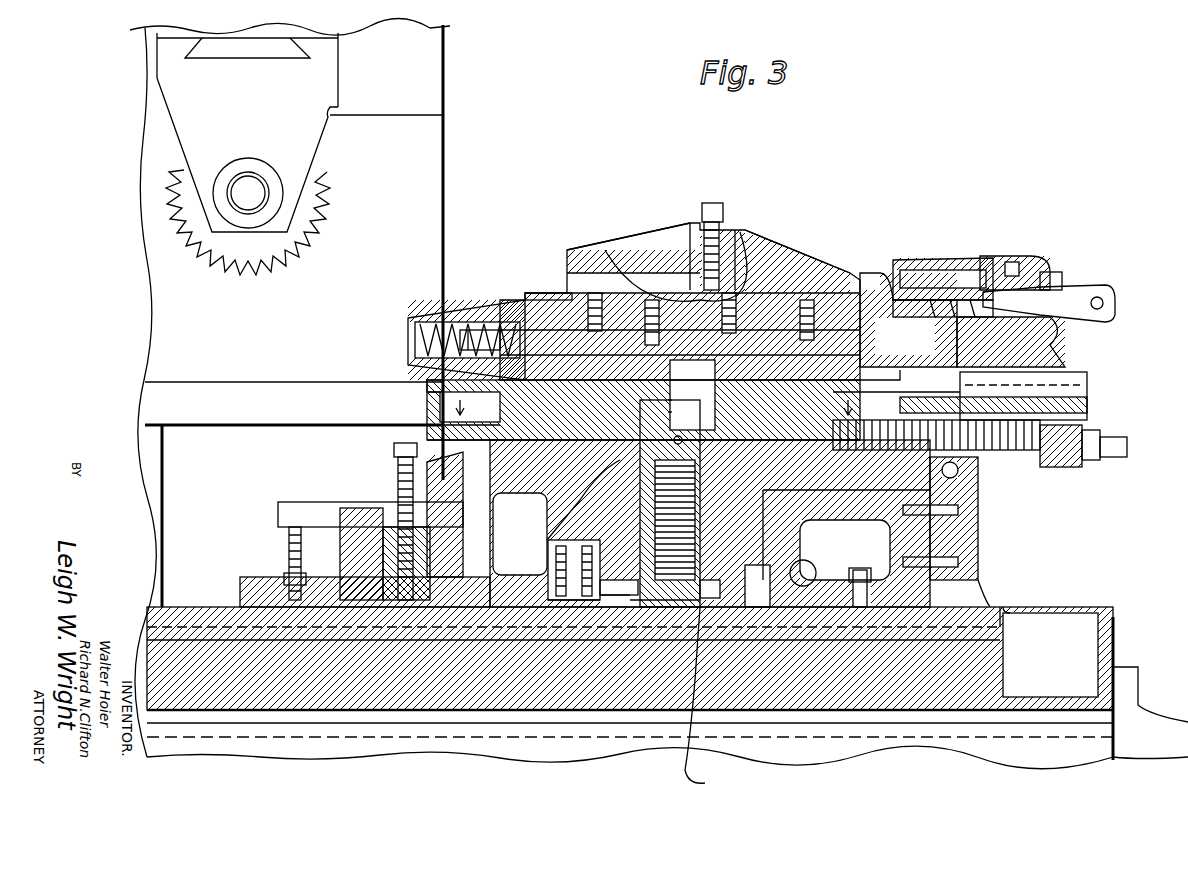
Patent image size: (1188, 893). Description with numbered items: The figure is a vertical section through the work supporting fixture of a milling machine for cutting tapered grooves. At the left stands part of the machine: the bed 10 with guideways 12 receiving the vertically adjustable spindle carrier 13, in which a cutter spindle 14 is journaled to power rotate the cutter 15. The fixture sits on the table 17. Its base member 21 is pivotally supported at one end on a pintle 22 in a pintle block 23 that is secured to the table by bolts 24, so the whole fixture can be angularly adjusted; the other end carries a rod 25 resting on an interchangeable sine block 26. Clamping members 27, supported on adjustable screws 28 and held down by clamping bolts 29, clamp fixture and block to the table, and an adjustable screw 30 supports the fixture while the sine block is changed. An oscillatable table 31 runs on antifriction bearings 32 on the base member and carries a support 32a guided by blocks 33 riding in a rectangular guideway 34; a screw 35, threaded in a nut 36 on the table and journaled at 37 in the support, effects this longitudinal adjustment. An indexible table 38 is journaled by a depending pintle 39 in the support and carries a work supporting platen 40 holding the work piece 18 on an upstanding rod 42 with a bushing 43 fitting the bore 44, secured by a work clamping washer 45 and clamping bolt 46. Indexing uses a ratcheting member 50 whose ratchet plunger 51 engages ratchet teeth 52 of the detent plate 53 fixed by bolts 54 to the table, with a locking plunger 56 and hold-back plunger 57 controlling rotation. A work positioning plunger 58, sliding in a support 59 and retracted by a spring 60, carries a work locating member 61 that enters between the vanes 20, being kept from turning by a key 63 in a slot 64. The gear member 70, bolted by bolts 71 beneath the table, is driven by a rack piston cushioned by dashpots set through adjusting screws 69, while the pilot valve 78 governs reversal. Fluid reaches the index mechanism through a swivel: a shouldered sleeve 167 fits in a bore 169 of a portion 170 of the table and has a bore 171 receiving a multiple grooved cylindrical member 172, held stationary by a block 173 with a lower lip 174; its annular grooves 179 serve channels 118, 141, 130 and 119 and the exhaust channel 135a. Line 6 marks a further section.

The section line 6 is at (654, 397).
The bed 10 is at (300, 745).
The guideways 12 is at (147, 66).
The spindle carrier 13 is at (395, 148).
The cutter spindle 14 is at (245, 190).
The cutter 15 is at (175, 208).
The table 17 is at (1116, 626).
The work piece 18 is at (640, 232).
The vanes 20 is at (635, 230).
The base member 21 is at (985, 585).
The pintle 22 is at (825, 545).
The pintle block 23 is at (982, 598).
The bolts 24 is at (860, 568).
The rod 25 is at (490, 560).
The sine block 26 is at (490, 598).
The clamping members 27 is at (300, 512).
The adjustable screws 28 is at (289, 555).
The clamping bolts 29 is at (427, 500).
The adjustable screw 30 is at (440, 395).
The oscillatable table 31 is at (505, 440).
The antifriction bearings 32 is at (500, 455).
The support 32a is at (450, 385).
The blocks 33 is at (448, 410).
The rectangular guideway 34 is at (505, 425).
The screw 35 is at (1005, 450).
The nut 36 is at (910, 413).
The journal 37 is at (1062, 467).
The indexible table 38 is at (540, 295).
The depending pintle 39 is at (870, 273).
The work supporting platen 40 is at (870, 273).
The upstanding rod 42 is at (735, 295).
The bushing 43 is at (728, 232).
The bore 44 is at (740, 232).
The work clamping washer 45 is at (700, 230).
The clamping bolt 46 is at (712, 203).
The ratcheting member 50 is at (420, 340).
The ratchet plunger 51 is at (478, 332).
The ratchet teeth 52 is at (600, 330).
The detent plate 53 is at (560, 290).
The bolts 54 is at (808, 300).
The locking plunger 56 is at (440, 315).
The hold-back plunger 57 is at (880, 333).
The work positioning plunger 58 is at (1070, 300).
The support 59 is at (935, 300).
The spring 60 is at (985, 256).
The work locating member 61 is at (900, 260).
The key 63 is at (1012, 262).
The slot 64 is at (1050, 272).
The adjusting screws 69 is at (398, 470).
The gear member 70 is at (560, 512).
The bolts 71 is at (803, 560).
The pilot valve 78 is at (980, 490).
The channel 118 is at (692, 395).
The channel 119 is at (691, 412).
The channel 130 is at (730, 436).
The exhaust or return channel 135a is at (696, 399).
The channel 141 is at (665, 430).
The shouldered sleeve 167 is at (632, 596).
The bore 169 is at (720, 589).
The portion 170 is at (619, 585).
The bore 171 is at (700, 596).
The multiple grooved cylindrical member 172 is at (556, 560).
The block 173 is at (582, 575).
The lower lip 174 is at (574, 599).
The annular grooves 179 is at (718, 701).